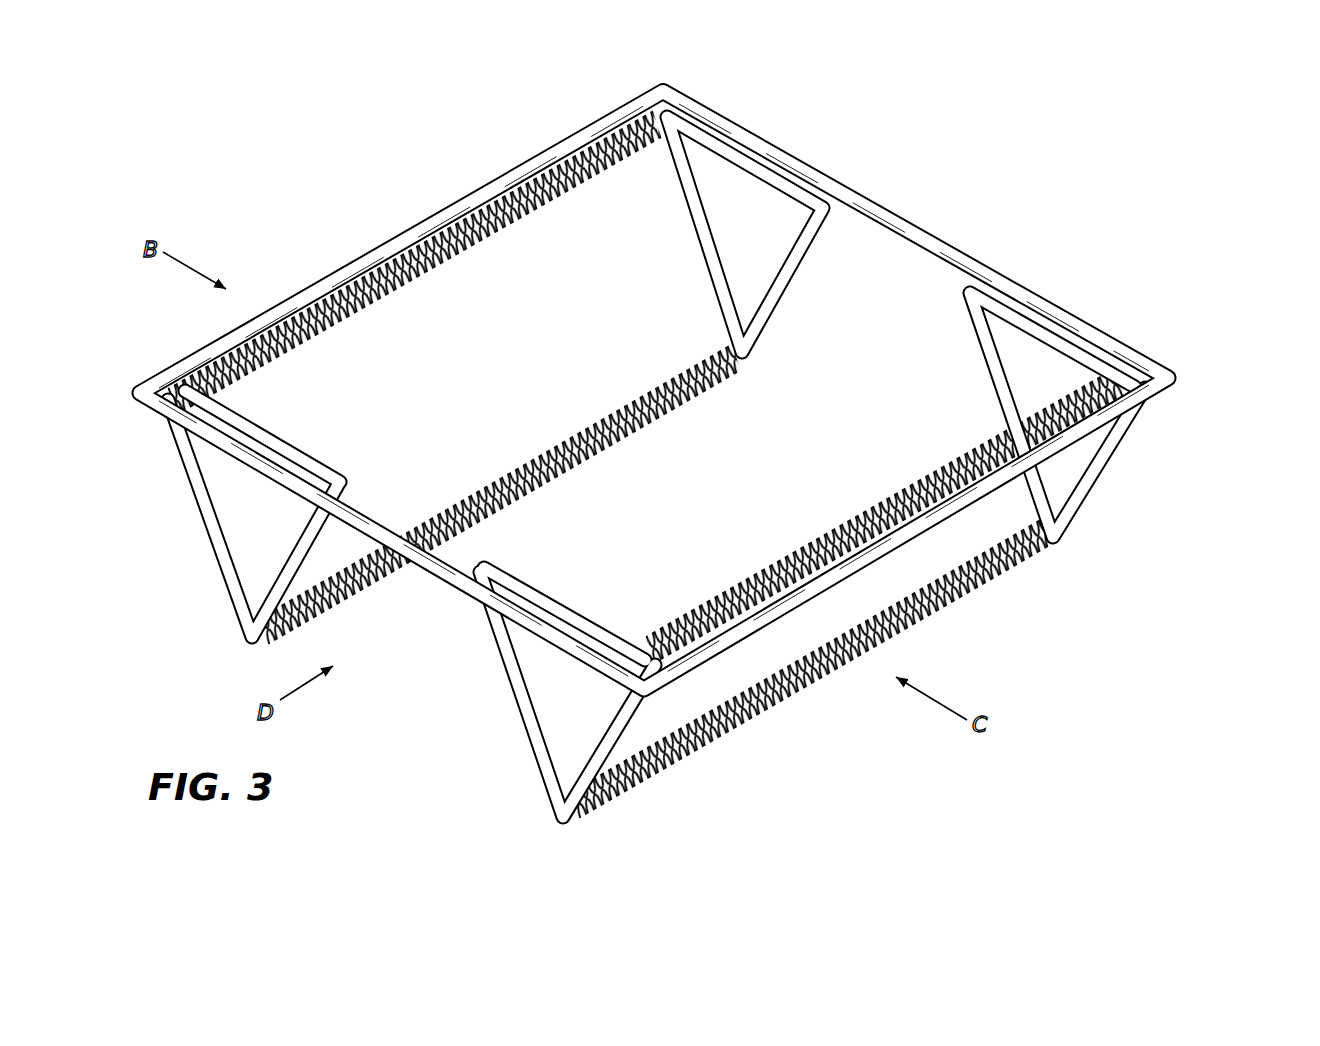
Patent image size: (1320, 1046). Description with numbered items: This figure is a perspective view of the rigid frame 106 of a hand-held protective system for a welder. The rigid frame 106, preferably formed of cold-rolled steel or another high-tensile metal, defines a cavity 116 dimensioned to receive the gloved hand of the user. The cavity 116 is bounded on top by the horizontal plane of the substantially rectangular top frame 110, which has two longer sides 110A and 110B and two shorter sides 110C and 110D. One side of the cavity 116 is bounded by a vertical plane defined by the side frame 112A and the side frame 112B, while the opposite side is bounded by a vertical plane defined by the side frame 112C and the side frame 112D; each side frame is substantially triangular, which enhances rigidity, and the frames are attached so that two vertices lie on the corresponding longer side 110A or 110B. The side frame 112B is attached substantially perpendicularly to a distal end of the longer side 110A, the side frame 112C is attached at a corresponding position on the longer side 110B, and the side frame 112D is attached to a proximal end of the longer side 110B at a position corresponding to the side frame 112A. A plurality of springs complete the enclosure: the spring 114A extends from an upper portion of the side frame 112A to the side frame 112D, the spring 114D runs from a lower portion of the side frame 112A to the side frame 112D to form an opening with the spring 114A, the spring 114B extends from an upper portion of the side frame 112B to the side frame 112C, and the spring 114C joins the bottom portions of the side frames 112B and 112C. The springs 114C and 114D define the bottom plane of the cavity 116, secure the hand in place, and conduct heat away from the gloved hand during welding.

The rigid frame 106 is at (960, 202).
The top frame 110 is at (975, 267).
The longer side 110A is at (865, 192).
The longer side 110B is at (452, 597).
The shorter side 110C is at (555, 138).
The shorter side 110D is at (1189, 411).
The side frame 112A is at (987, 383).
The side frame 112B is at (698, 263).
The side frame 112C is at (212, 555).
The side frame 112D is at (525, 748).
The spring 114A is at (940, 470).
The spring 114B is at (410, 250).
The spring 114C is at (375, 587).
The spring 114D is at (693, 748).
The cavity 116 is at (737, 451).